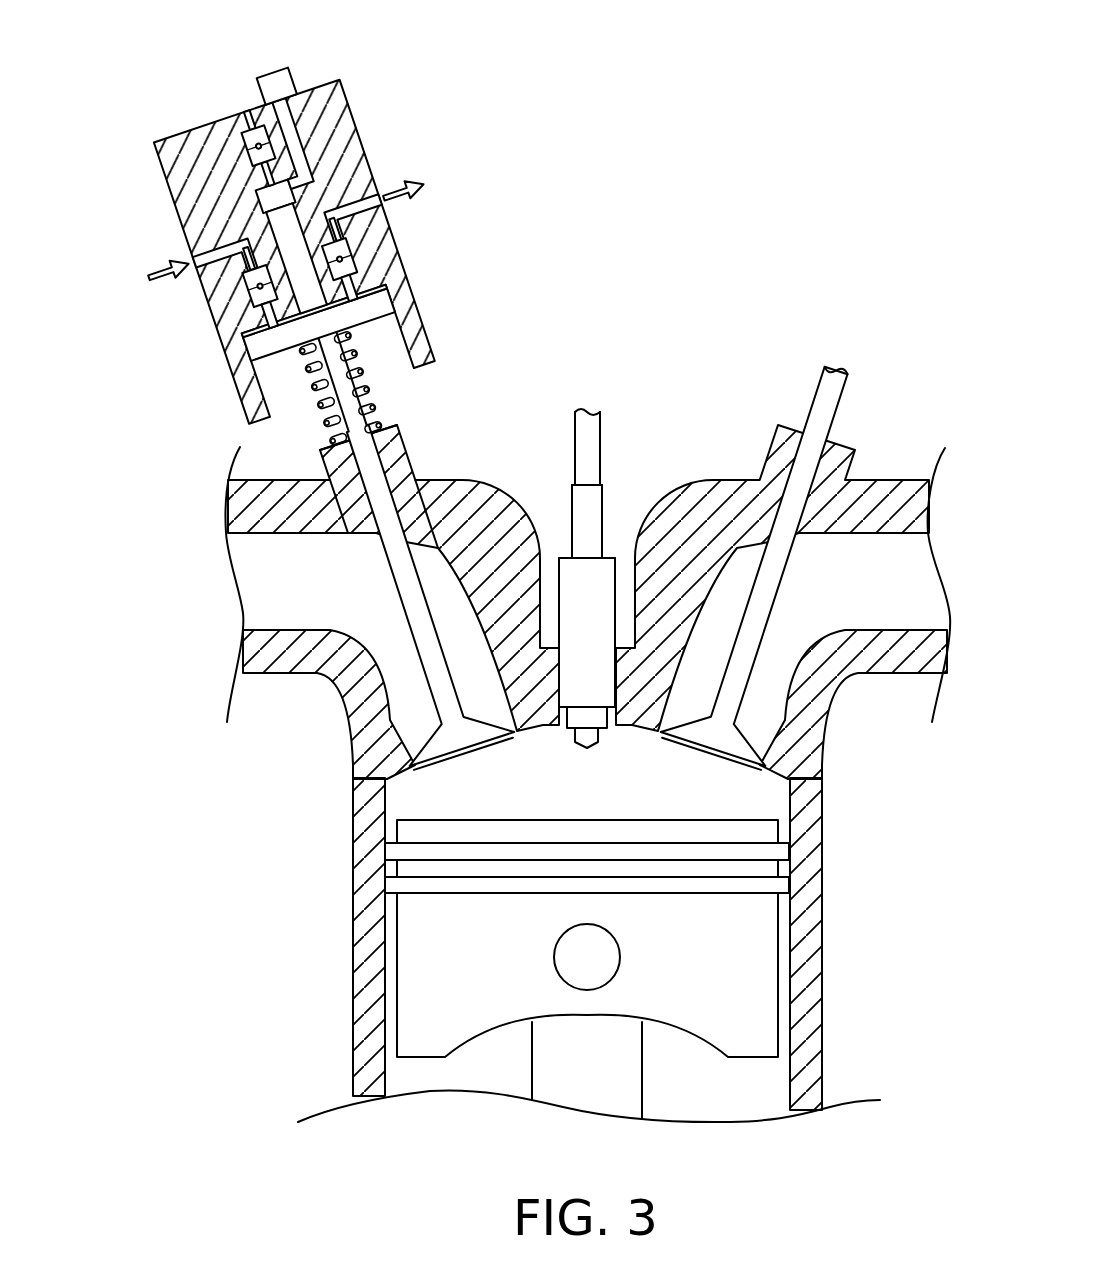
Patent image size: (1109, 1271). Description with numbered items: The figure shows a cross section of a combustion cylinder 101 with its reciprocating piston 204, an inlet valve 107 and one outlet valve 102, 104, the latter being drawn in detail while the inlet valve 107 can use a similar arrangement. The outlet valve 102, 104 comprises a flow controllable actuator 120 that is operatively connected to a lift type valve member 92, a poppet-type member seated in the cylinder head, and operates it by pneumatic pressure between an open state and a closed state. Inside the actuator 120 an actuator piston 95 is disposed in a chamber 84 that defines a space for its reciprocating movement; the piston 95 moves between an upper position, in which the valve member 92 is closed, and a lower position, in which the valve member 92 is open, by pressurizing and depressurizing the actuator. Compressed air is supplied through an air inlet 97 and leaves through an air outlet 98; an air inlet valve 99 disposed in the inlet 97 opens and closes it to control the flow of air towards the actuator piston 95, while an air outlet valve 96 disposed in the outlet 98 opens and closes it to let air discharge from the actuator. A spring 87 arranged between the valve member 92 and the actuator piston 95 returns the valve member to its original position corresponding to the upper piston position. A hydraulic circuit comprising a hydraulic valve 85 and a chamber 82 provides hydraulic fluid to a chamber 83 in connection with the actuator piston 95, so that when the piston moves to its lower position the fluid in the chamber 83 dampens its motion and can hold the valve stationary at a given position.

The chamber 82 is at (278, 70).
The chamber 83 is at (270, 200).
The chamber 84 is at (244, 335).
The hydraulic valve 85 is at (258, 148).
The spring 87 is at (378, 405).
The valve member 92 is at (368, 460).
The actuator piston 95 is at (378, 305).
The air outlet valve 96 is at (343, 256).
The air inlet 97 is at (250, 284).
The air outlet 98 is at (362, 212).
The air inlet valve 99 is at (250, 302).
The combustion cylinder 101 is at (820, 1013).
The first outlet valve 102 is at (362, 78).
The second outlet valve 104 is at (269, 260).
The inlet valve 107 is at (863, 400).
The flow controllable actuator 120 is at (153, 229).
The reciprocating piston 204 is at (717, 967).